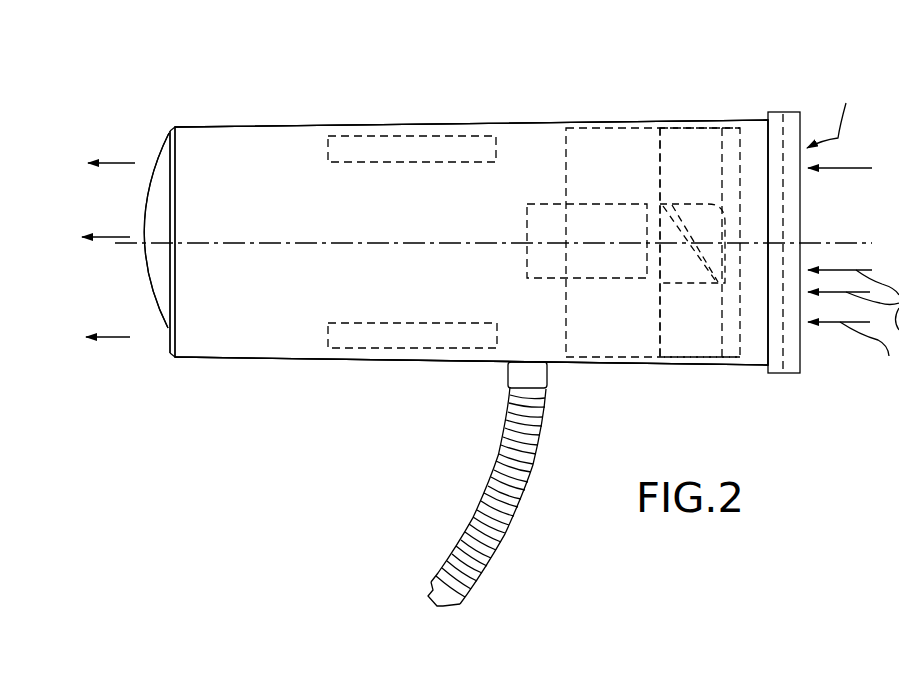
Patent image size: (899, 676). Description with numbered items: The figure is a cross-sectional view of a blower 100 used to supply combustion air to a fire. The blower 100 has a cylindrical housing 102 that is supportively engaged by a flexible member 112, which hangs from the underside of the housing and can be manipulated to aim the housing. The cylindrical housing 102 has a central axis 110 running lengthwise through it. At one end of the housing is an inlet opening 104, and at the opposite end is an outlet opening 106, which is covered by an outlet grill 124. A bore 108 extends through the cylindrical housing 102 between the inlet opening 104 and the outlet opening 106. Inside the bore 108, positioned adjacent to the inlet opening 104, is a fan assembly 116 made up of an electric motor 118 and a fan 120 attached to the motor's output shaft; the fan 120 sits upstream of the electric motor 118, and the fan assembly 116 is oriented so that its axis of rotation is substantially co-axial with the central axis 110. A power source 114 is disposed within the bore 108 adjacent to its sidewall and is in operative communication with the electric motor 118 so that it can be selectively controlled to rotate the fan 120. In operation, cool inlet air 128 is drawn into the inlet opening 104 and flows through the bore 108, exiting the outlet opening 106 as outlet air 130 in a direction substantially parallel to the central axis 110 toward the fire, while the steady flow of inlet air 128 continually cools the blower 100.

The blower 100 is at (352, 95).
The cylindrical housing 102 is at (238, 127).
The inlet opening 104 is at (800, 346).
The outlet opening 106 is at (172, 343).
The bore 108 is at (298, 278).
The central axis 110 is at (826, 243).
The flexible member 112 is at (500, 527).
The power source 114 is at (433, 162).
The fan assembly 116 is at (604, 160).
The electric motor 118 is at (598, 278).
The fan 120 is at (692, 345).
The outlet grill 124 is at (155, 320).
The inlet air 128 is at (848, 168).
The outlet air 130 is at (118, 237).